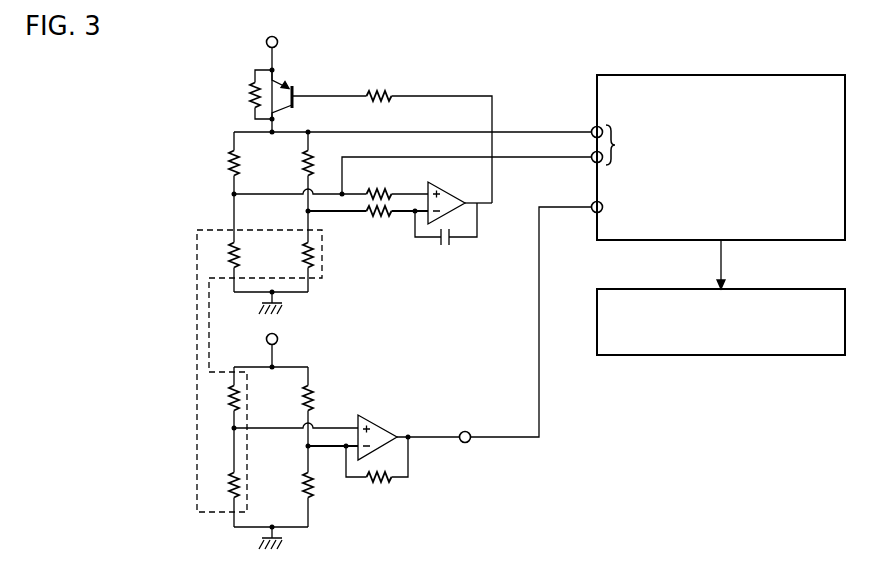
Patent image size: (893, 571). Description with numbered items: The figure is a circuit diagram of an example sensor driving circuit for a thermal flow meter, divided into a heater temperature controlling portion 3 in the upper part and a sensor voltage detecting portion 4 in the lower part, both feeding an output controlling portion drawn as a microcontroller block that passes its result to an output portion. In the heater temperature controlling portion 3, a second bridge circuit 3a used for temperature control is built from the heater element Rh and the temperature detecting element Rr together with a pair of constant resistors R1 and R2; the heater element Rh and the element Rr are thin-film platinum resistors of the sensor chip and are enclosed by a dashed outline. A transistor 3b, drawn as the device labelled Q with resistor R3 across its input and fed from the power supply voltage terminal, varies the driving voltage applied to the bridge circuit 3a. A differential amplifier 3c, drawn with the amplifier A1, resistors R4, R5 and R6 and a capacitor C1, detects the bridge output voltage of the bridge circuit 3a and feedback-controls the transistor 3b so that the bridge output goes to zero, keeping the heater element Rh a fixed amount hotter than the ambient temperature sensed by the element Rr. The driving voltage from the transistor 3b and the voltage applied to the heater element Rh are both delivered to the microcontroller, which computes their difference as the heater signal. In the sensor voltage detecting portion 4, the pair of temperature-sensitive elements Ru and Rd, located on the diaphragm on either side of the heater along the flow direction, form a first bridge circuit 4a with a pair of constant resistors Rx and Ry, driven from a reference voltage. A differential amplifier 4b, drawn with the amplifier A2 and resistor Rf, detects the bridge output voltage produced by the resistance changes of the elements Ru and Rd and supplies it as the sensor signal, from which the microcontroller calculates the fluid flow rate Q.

The heater temperature controlling portion 3 is at (432, 56).
The second bridge circuit 3a is at (221, 140).
The transistor 3b is at (315, 69).
The differential amplifier 3c is at (476, 195).
The sensor voltage detecting portion 4 is at (393, 372).
The first bridge circuit 4a is at (322, 382).
The differential amplifier 4b is at (412, 432).
The flow rate Q is at (283, 71).
The constant resistor R1 is at (218, 163).
The constant resistor R2 is at (291, 171).
The resistor R3 is at (243, 94).
The resistor R4 is at (379, 86).
The resistor R5 is at (398, 185).
The resistor R6 is at (398, 221).
The heater element Rh is at (218, 243).
The temperature detecting element Rr is at (294, 251).
The operational amplifier A1 is at (441, 191).
The capacitor C1 is at (440, 246).
The temperature-sensitive element Ru is at (218, 397).
The temperature-sensitive element Rd is at (218, 477).
The constant resistor Rx is at (293, 406).
The constant resistor Ry is at (293, 486).
The operational amplifier A2 is at (377, 423).
The feedback resistor Rf is at (376, 470).